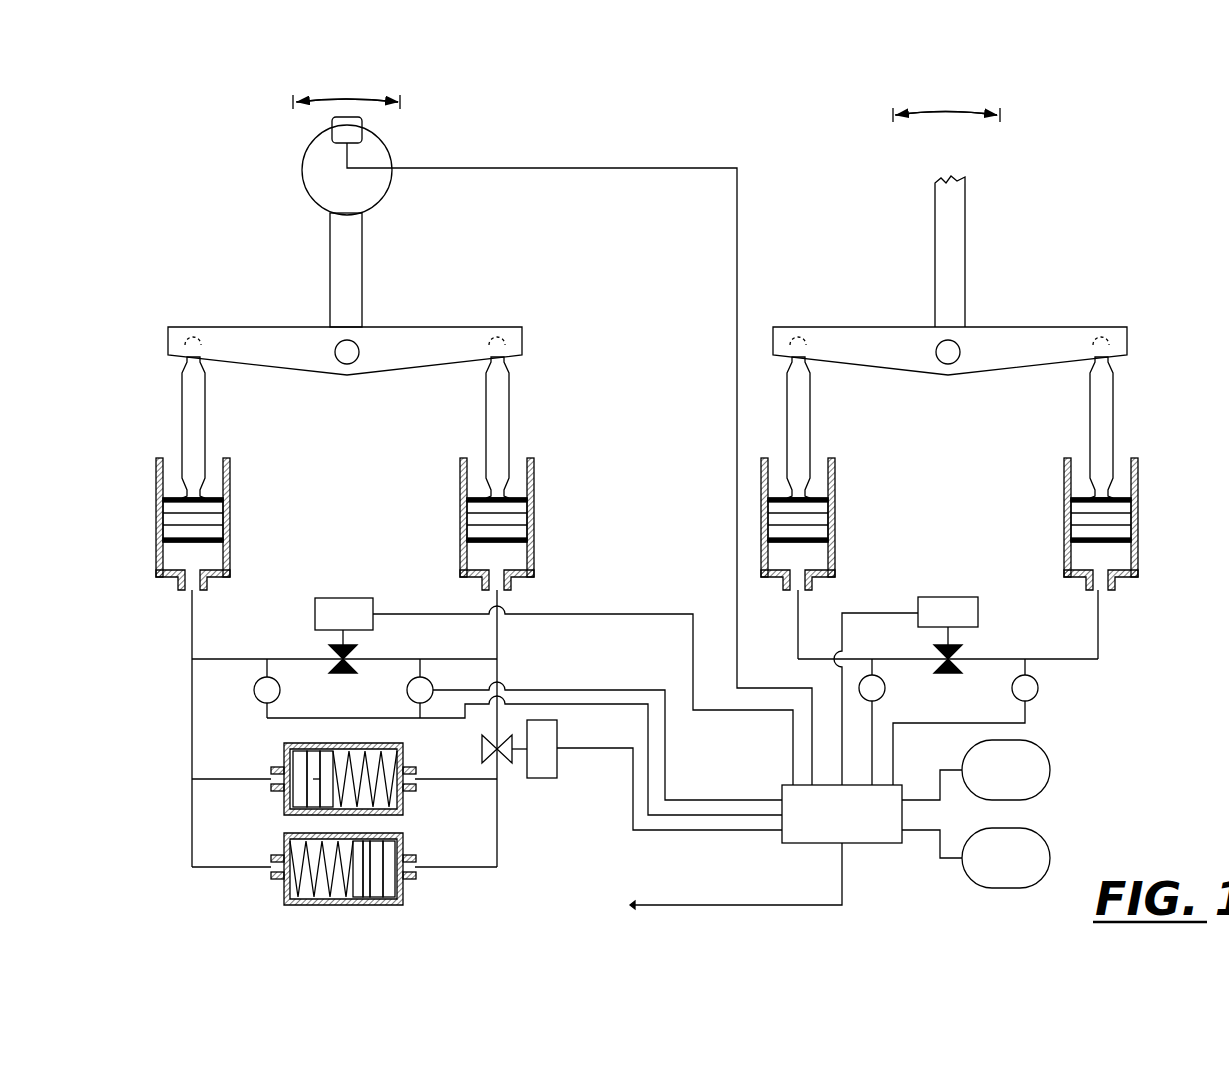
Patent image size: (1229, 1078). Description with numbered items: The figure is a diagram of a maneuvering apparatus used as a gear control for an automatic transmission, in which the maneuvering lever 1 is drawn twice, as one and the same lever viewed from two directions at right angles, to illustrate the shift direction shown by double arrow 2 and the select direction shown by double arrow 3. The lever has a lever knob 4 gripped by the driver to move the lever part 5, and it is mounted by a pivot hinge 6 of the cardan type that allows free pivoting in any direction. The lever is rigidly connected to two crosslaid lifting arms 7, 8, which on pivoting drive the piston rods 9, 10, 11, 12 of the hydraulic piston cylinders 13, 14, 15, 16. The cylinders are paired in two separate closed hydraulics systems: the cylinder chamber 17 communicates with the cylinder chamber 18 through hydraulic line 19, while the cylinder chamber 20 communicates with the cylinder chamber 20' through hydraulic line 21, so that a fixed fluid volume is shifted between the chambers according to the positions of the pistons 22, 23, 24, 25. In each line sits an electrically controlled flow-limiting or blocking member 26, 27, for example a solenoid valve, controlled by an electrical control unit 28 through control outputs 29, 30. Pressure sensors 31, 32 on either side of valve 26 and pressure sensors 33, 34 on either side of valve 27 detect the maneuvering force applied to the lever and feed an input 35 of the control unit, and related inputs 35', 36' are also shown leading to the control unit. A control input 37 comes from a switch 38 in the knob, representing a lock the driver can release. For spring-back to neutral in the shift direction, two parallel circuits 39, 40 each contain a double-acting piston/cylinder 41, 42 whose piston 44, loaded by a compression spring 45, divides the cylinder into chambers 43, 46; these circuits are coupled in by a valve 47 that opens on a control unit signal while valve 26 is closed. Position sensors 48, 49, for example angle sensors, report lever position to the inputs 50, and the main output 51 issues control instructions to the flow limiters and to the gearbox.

The maneuvering lever 1 is at (326, 275).
The double arrow 2 is at (330, 102).
The double arrow 3 is at (935, 117).
The lever knob 4 is at (320, 195).
The lever part 5 is at (350, 268).
The pivot hinge 6 is at (364, 320).
The lifting arm 7 is at (300, 332).
The lifting arm 8 is at (910, 335).
The piston rod 9 is at (182, 410).
The piston rod 10 is at (507, 402).
The piston rod 11 is at (806, 425).
The piston rod 12 is at (1110, 405).
The hydraulic piston cylinder 13 is at (148, 522).
The hydraulic piston cylinder 14 is at (540, 520).
The hydraulic piston cylinder 15 is at (840, 526).
The hydraulic piston cylinder 16 is at (1142, 528).
The cylinder chamber 17 is at (167, 558).
The cylinder chamber 18 is at (510, 557).
The hydraulic line 19 is at (216, 659).
The cylinder chamber 20 is at (834, 566).
The cylinder chamber 20' is at (1138, 569).
The hydraulic line 21 is at (1078, 659).
The piston 22 is at (162, 500).
The piston 23 is at (528, 503).
The piston 24 is at (820, 503).
The piston 25 is at (1130, 505).
The flow-limiting or blocking member 26 is at (331, 648).
The flow-limiting or blocking member 27 is at (962, 650).
The electrical control unit 28 is at (872, 840).
The control output 29 is at (793, 735).
The control output 30 is at (842, 757).
The pressure sensor 31 is at (254, 690).
The pressure sensor 32 is at (407, 695).
The pressure sensor 33 is at (885, 690).
The pressure sensor 34 is at (1036, 690).
The input 35 is at (524, 772).
The signal line 35' is at (909, 743).
The signal line 36' is at (1009, 741).
The control input 37 is at (770, 688).
The switch 38 is at (337, 145).
The parallel circuit 39 is at (216, 779).
The parallel circuit 40 is at (216, 867).
The double-acting piston/cylinder 41 is at (392, 814).
The double-acting piston/cylinder 42 is at (322, 905).
The chamber 43 is at (400, 797).
The piston 44 is at (300, 795).
The compression spring 45 is at (376, 765).
The chamber 46 is at (283, 757).
The valve 47 is at (500, 766).
The position sensor 48 is at (1040, 786).
The position sensor 49 is at (1040, 852).
The inputs 50 is at (921, 805).
The main output 51 is at (760, 905).